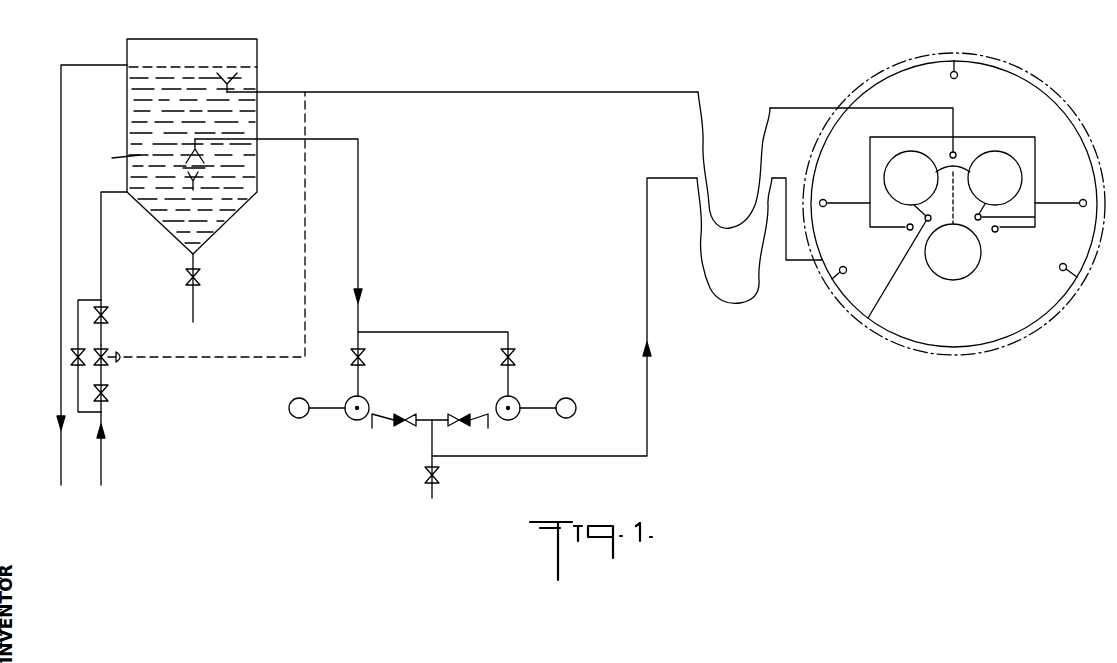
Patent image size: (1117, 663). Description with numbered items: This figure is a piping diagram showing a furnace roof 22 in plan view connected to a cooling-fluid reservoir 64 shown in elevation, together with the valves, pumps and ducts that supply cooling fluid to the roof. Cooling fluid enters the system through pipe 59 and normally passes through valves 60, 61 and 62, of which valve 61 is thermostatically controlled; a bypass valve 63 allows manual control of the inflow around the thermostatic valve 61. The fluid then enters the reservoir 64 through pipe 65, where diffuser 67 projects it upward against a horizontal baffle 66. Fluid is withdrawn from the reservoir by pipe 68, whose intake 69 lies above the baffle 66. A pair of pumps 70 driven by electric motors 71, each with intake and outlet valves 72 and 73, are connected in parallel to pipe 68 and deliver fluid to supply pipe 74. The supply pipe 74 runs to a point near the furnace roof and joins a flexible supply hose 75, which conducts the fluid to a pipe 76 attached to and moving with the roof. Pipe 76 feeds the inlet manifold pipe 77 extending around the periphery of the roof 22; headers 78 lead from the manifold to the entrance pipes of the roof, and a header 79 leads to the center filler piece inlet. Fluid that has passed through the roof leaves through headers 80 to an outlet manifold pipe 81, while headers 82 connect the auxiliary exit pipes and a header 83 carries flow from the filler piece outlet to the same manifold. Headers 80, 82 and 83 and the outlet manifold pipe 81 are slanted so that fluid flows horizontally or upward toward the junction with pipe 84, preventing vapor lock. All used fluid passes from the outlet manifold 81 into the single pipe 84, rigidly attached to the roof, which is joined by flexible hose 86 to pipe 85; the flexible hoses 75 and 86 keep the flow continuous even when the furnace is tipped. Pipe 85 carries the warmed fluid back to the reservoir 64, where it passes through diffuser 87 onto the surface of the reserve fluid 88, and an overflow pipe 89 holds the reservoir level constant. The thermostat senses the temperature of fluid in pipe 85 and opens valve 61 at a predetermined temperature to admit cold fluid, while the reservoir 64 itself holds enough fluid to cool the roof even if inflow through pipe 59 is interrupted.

The furnace roof 22 is at (995, 309).
The pipe 59 is at (101, 466).
The valve 60 is at (109, 394).
The thermostatically controlled valve 61 is at (106, 352).
The valve 62 is at (106, 318).
The bypass valve 63 is at (71, 357).
The reservoir 64 is at (127, 100).
The pipe 65 is at (101, 262).
The horizontal baffle 66 is at (205, 168).
The diffuser 67 is at (197, 175).
The pipe 68 is at (358, 230).
The intake 69 is at (190, 160).
The pumps 70 is at (362, 398).
The electric motors 71 is at (302, 417).
The intake valves 72 is at (364, 358).
The outlet valves 73 is at (400, 426).
The supply pipe 74 is at (557, 456).
The flexible supply hose 75 is at (757, 305).
The pipe 76 is at (786, 262).
The inlet manifold pipe 77 is at (838, 297).
The header 78 is at (958, 76).
The header 79 is at (886, 285).
The headers 80 is at (955, 152).
The outlet manifold pipe 81 is at (870, 150).
The headers 82 is at (855, 203).
The header 83 is at (1018, 212).
The pipe 84 is at (824, 92).
The pipe 85 is at (655, 76).
The flexible hose 86 is at (706, 127).
The diffuser 87 is at (240, 76).
The reserve fluid 88 is at (109, 158).
The overflow pipe 89 is at (61, 148).